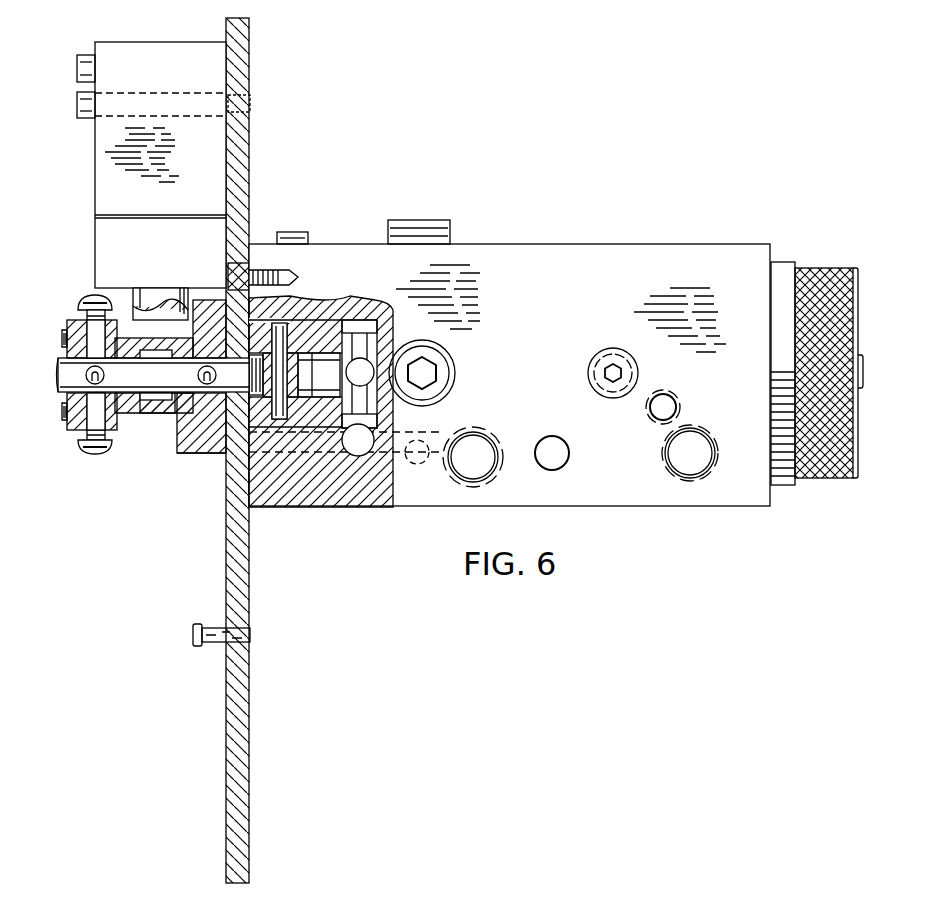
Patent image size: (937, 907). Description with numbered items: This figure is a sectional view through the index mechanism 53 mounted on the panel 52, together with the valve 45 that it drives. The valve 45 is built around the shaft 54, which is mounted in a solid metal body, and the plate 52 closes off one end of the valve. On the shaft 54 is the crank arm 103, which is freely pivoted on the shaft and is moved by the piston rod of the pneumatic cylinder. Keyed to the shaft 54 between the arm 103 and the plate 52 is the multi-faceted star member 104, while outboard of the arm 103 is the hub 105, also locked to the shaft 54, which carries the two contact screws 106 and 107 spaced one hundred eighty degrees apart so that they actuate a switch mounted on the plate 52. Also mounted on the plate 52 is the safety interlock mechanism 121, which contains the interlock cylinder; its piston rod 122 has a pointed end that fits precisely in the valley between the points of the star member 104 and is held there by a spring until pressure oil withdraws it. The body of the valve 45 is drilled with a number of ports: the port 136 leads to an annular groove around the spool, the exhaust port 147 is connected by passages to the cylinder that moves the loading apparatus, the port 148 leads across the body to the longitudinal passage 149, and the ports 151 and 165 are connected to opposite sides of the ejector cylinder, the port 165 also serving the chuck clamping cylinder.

The valve 45 is at (545, 243).
The panel 52 is at (240, 133).
The index mechanism 53 is at (188, 447).
The shaft 54 is at (62, 393).
The crank arm 103 is at (158, 413).
The star member 104 is at (205, 457).
The hub 105 is at (73, 318).
The contact screw 106 is at (105, 295).
The contact screw 107 is at (102, 453).
The safety interlock mechanism 121 is at (102, 167).
The piston rod 122 is at (168, 300).
The port 136 is at (358, 456).
The exhaust port 147 is at (470, 477).
The port 148 is at (548, 466).
The longitudinal passage 149 is at (420, 464).
The port 151 is at (656, 417).
The port 165 is at (697, 466).